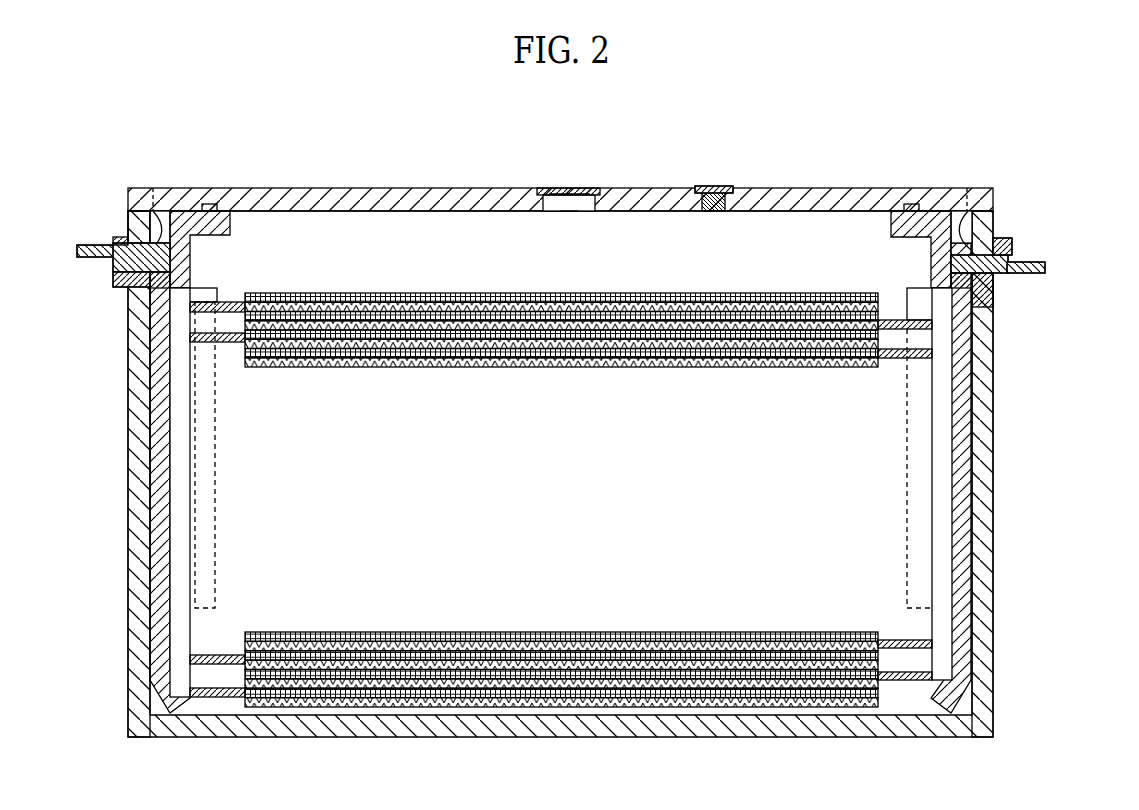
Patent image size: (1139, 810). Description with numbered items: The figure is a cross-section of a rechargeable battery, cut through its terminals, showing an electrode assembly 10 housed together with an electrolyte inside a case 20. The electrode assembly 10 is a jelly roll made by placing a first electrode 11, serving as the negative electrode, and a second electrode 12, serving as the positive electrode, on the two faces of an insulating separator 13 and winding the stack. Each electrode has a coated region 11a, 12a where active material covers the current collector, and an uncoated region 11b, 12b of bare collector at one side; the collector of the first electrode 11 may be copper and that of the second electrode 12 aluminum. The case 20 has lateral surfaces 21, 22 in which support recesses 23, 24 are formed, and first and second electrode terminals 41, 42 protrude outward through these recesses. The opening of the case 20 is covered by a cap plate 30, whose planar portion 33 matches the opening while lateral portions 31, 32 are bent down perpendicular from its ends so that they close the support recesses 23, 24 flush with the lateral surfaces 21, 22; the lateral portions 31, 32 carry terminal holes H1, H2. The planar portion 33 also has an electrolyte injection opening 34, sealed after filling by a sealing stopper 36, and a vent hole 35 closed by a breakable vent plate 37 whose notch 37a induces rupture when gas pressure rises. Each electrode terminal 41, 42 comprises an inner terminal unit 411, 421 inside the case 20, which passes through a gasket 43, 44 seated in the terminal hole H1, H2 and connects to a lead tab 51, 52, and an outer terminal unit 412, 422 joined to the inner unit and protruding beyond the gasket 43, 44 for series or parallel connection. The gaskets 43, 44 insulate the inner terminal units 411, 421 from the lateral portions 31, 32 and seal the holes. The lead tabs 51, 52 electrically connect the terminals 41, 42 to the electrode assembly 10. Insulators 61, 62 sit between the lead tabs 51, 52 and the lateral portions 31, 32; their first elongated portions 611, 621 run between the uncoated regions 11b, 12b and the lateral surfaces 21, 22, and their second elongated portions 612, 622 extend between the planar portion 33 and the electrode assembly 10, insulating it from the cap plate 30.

The electrode assembly 10 is at (561, 537).
The first electrode 11 is at (253, 556).
The coated region 11a is at (292, 698).
The uncoated region 11b is at (217, 732).
The second electrode 12 is at (861, 565).
The coated region 12a is at (815, 700).
The uncoated region 12b is at (905, 725).
The separator 13 is at (578, 704).
The case 20 is at (1000, 405).
The lateral surface 21 is at (140, 470).
The lateral surface 22 is at (985, 470).
The support recess 23 is at (135, 302).
The support recess 24 is at (990, 306).
The cap plate 30 is at (560, 168).
The lateral portion 31 is at (135, 222).
The lateral portion 32 is at (986, 290).
The planar portion 33 is at (412, 190).
The electrolyte injection opening 34 is at (703, 188).
The vent hole 35 is at (572, 198).
The sealing stopper 36 is at (714, 198).
The vent plate 37 is at (595, 190).
The notch 37a is at (553, 189).
The first electrode terminal 41 is at (158, 202).
The inner terminal unit 411 is at (182, 262).
The outer terminal unit 412 is at (78, 251).
The second electrode terminal 42 is at (966, 189).
The inner terminal unit 421 is at (930, 263).
The outer terminal unit 422 is at (1047, 266).
The gasket 43 is at (118, 282).
The gasket 44 is at (1000, 243).
The lead tab 51 is at (180, 540).
The lead tab 52 is at (947, 540).
The insulator 61 is at (158, 424).
The first elongated portion 611 is at (162, 480).
The second elongated portion 612 is at (218, 222).
The insulator 62 is at (967, 425).
The first elongated portion 621 is at (962, 483).
The second elongated portion 622 is at (905, 222).
The terminal hole H1 is at (152, 243).
The terminal hole H2 is at (968, 243).